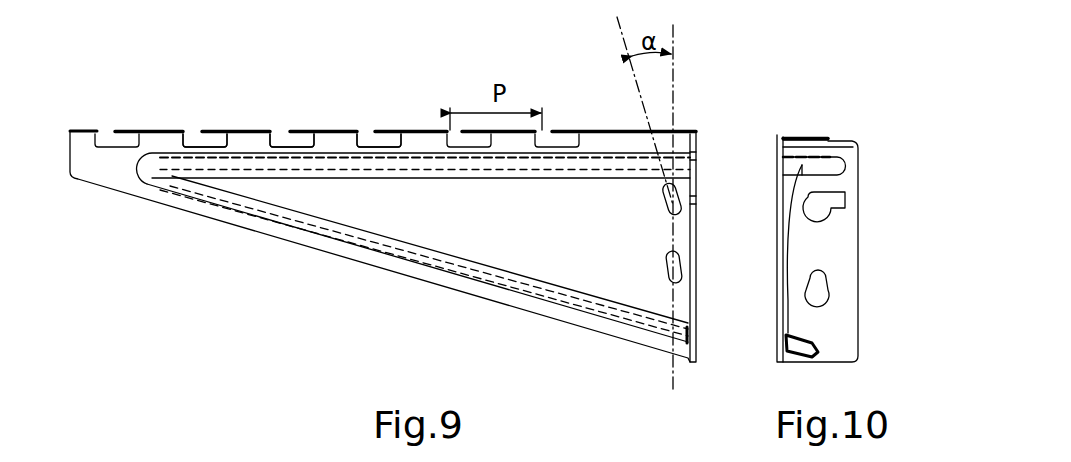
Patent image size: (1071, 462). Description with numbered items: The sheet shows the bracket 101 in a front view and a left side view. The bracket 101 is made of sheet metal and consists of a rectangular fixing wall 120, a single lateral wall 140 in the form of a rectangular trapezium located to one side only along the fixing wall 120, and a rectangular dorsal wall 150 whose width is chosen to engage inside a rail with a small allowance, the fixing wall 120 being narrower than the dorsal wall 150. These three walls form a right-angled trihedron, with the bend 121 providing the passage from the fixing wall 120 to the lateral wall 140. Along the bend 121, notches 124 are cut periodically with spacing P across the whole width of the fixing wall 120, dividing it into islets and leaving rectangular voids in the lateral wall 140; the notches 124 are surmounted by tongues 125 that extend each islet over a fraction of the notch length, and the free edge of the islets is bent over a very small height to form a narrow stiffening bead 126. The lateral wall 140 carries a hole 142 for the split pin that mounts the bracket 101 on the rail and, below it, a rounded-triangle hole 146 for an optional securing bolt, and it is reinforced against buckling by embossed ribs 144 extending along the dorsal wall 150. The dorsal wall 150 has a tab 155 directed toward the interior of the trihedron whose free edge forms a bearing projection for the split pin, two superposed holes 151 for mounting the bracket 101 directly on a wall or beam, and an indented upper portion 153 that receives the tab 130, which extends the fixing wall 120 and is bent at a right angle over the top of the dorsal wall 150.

In FIG. 9, the bracket 101 is at (291, 256).
In FIG. 9, the fixing wall 120 is at (435, 124).
In FIG. 10, the fixing wall 120 is at (818, 135).
In FIG. 10, the bend 121 is at (780, 136).
In FIG. 9, the notches 124 is at (197, 137).
In FIG. 9, the tongues 125 is at (293, 132).
In FIG. 9, the bead 126 is at (413, 130).
In FIG. 9, the tab 130 is at (697, 130).
In FIG. 10, the tab 130 is at (817, 248).
In FIG. 9, the lateral wall 140 is at (525, 228).
In FIG. 10, the lateral wall 140 is at (785, 340).
In FIG. 9, the hole 142 is at (661, 183).
In FIG. 9, the embossed ribs 144 is at (420, 172).
In FIG. 10, the embossed ribs 144 is at (782, 236).
In FIG. 9, the hole 146 is at (667, 270).
In FIG. 9, the dorsal wall 150 is at (700, 266).
In FIG. 10, the dorsal wall 150 is at (830, 322).
In FIG. 10, the holes 151 is at (828, 297).
In FIG. 9, the upper portion 153 is at (689, 130).
In FIG. 10, the upper portion 153 is at (847, 143).
In FIG. 9, the tab 155 is at (693, 200).
In FIG. 10, the tab 155 is at (847, 197).